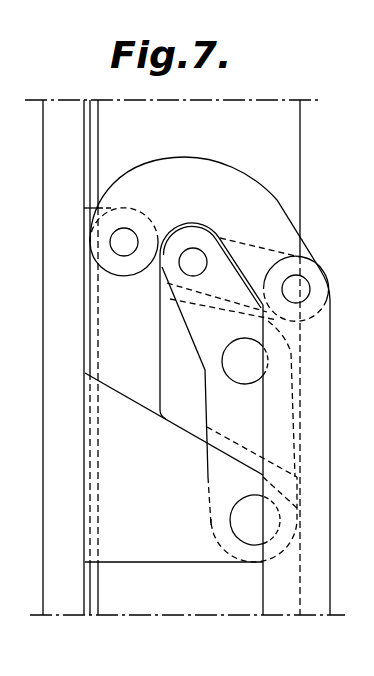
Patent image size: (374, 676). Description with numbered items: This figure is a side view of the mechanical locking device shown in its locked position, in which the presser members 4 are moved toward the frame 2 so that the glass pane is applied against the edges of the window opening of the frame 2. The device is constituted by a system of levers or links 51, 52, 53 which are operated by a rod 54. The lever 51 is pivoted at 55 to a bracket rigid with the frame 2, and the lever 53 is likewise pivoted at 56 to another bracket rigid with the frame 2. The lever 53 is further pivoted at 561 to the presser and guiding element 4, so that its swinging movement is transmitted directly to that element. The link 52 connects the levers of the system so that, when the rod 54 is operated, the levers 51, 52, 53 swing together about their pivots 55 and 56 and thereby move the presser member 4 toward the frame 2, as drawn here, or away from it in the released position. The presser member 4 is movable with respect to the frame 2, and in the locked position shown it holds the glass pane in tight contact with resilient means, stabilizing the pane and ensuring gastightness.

The frame 2 is at (56, 282).
The presser member 4 is at (283, 143).
The lever 51 is at (222, 183).
The link 52 is at (263, 247).
The lever 53 is at (208, 368).
The rod 54 is at (320, 431).
The pivot 55 is at (126, 239).
The pivot 56 is at (236, 518).
The pivot 561 is at (233, 386).